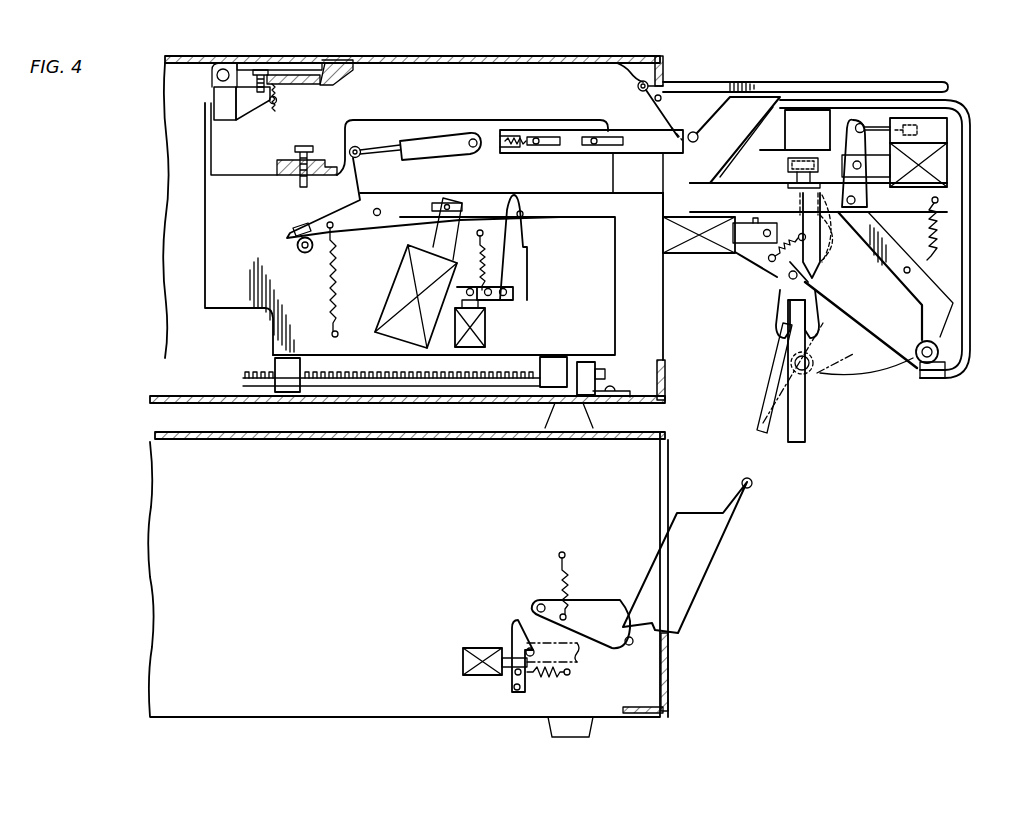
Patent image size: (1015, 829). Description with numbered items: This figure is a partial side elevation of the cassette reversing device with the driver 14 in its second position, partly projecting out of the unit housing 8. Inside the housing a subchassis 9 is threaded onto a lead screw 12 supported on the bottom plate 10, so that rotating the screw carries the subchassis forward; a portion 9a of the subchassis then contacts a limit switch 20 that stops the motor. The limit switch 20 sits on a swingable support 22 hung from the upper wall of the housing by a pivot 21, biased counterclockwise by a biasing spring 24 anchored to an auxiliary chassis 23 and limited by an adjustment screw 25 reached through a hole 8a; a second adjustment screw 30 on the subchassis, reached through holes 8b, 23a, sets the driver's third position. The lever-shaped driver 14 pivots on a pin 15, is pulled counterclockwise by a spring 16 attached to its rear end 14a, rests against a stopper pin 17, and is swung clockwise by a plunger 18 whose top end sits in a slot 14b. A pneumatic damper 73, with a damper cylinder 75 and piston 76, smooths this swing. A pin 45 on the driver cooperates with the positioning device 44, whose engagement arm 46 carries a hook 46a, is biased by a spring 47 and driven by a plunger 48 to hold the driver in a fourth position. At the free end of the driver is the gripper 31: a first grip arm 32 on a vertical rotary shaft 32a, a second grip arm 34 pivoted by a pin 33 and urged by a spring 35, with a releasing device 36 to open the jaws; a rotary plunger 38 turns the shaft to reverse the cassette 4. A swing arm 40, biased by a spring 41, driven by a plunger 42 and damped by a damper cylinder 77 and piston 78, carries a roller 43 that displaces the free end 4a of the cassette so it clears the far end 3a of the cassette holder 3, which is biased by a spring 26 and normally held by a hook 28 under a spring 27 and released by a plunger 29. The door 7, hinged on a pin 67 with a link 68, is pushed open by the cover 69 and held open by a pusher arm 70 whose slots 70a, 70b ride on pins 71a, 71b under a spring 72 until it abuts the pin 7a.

The cassette holder 3 is at (714, 552).
The far end of the cassette holder 3a is at (752, 486).
The cassette 4 is at (805, 430).
The free end of the cassette 4a is at (797, 442).
The door 7 is at (850, 84).
The pin 7a is at (697, 130).
The unit housing 8 is at (544, 60).
The hole 8a is at (290, 62).
The hole 8b is at (326, 62).
The subchassis 9 is at (604, 318).
The portion of the subchassis 9a is at (207, 160).
The bottom plate 10 is at (200, 398).
The lead screw 12 is at (402, 386).
The driver 14 is at (410, 200).
The rear end of the driver 14a is at (294, 230).
The slot 14b is at (458, 203).
The pin 15 is at (375, 216).
The biasing spring 16 is at (328, 290).
The stopper pin 17 is at (297, 247).
The plunger 18 is at (392, 297).
The limit switch 20 is at (220, 112).
The pivot 21 is at (223, 68).
The swingable support 22 is at (258, 112).
The auxiliary chassis 23 is at (348, 75).
The hole 23a is at (315, 83).
The biasing spring 24 is at (292, 86).
The adjustment screw 25 is at (270, 72).
The spring 26 is at (572, 588).
The spring 27 is at (548, 678).
The hook 28 is at (516, 624).
The plunger 29 is at (478, 648).
The adjustment screw 30 is at (300, 180).
The gripper 31 is at (721, 313).
The first grip arm 32 is at (788, 296).
The vertical rotary shaft 32a is at (826, 245).
The pin 33 is at (790, 278).
The second grip arm 34 is at (818, 306).
The spring 35 is at (770, 263).
The releasing device 36 is at (700, 262).
The rotary plunger 38 is at (796, 110).
The swing arm 40 is at (935, 302).
The spring 41 is at (935, 226).
The plunger 42 is at (940, 172).
The roller 43 is at (928, 362).
The positioning device 44 is at (530, 296).
The pin 45 is at (524, 214).
The engagement arm 46 is at (512, 283).
The hook 46a is at (522, 236).
The spring 47 is at (505, 268).
The plunger 48 is at (486, 328).
The pin 67 is at (667, 95).
The hook 68 is at (640, 66).
The cover 69 is at (962, 335).
The pusher arm 70 is at (680, 157).
The slot 70a is at (546, 142).
The slot 70b is at (604, 150).
The pin 71a is at (542, 138).
The pin 71b is at (592, 138).
The spring 72 is at (516, 138).
The pneumatic damper 73 is at (450, 118).
The damper cylinder 75 is at (440, 138).
The piston 76 is at (386, 146).
The damper cylinder 77 is at (940, 125).
The piston 78 is at (878, 126).